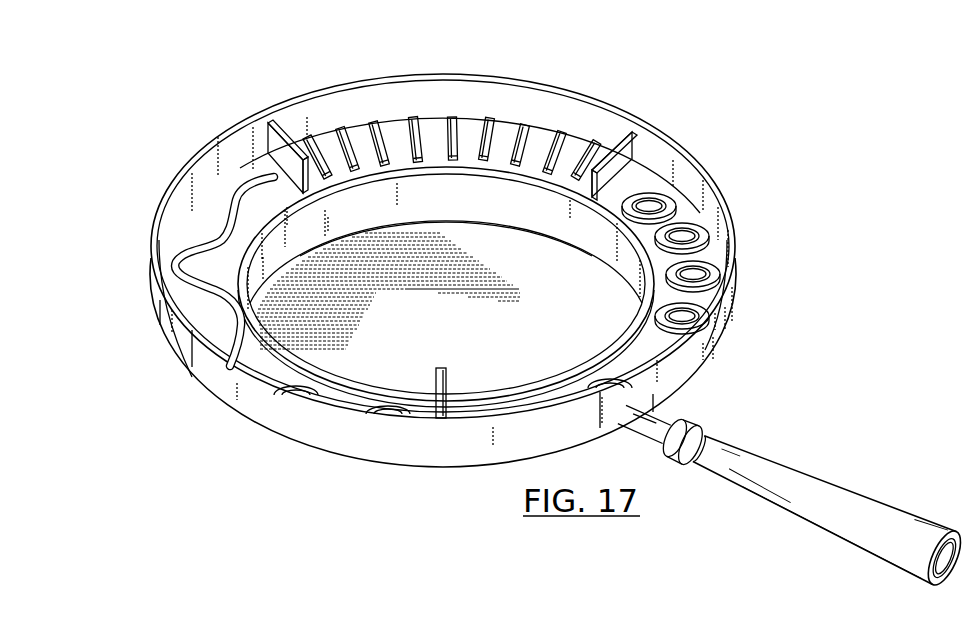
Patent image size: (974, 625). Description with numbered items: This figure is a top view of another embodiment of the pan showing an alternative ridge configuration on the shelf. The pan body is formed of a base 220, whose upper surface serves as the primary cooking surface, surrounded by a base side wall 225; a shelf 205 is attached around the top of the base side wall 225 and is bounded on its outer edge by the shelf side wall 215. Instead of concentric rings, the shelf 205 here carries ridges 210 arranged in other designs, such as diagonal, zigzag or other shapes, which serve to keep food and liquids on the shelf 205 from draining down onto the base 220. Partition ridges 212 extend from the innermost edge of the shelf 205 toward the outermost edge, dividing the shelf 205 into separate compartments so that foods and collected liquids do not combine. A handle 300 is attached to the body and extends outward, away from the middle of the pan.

The shelf 205 is at (208, 213).
The ridge 210 is at (525, 122).
The partition ridge 212 is at (278, 153).
The shelf side wall 215 is at (374, 80).
The base 220 is at (472, 329).
The base side wall 225 is at (472, 202).
The handle 300 is at (827, 503).